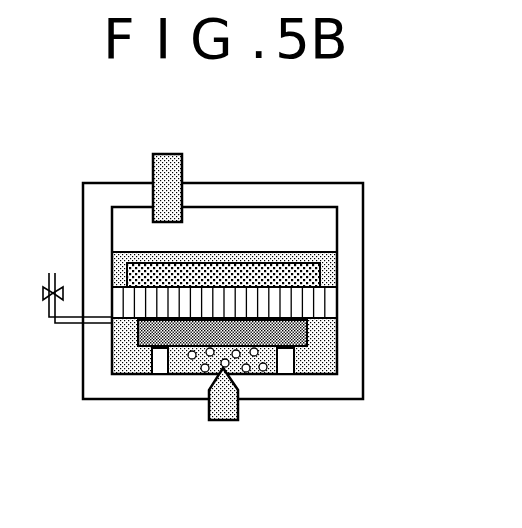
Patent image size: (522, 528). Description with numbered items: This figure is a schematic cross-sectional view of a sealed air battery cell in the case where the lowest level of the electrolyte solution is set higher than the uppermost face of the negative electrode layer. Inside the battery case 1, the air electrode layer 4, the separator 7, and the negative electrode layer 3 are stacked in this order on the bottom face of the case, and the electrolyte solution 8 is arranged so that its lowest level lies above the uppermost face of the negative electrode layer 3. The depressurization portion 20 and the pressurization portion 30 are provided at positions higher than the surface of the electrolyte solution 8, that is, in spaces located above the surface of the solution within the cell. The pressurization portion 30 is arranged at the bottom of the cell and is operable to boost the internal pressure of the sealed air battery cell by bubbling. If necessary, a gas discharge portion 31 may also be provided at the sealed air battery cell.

The battery case 1 is at (343, 362).
The negative electrode layer 3 is at (310, 273).
The air electrode layer 4 is at (297, 336).
The separator 7 is at (322, 302).
The electrolyte solution 8 is at (330, 257).
The depressurization portion 20 is at (166, 160).
The pressurization portion 30 is at (224, 410).
The gas discharge portion 31 is at (60, 324).